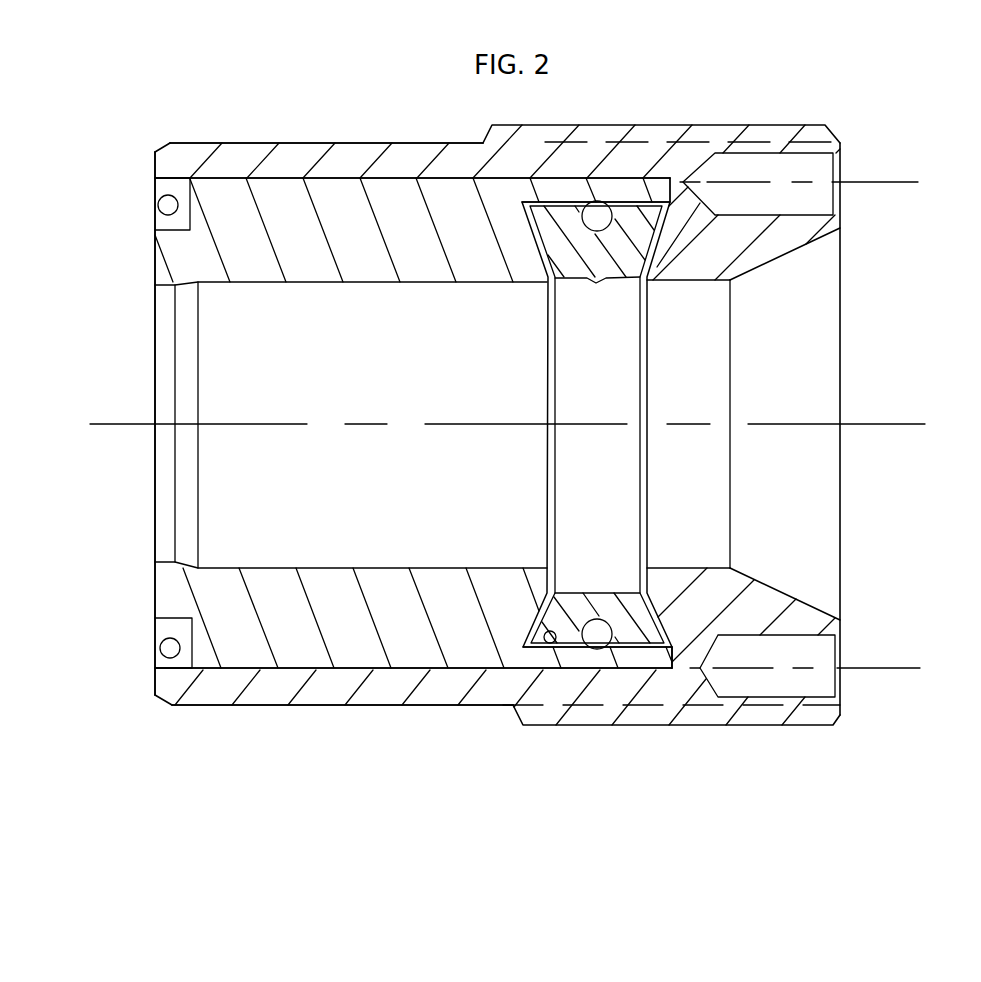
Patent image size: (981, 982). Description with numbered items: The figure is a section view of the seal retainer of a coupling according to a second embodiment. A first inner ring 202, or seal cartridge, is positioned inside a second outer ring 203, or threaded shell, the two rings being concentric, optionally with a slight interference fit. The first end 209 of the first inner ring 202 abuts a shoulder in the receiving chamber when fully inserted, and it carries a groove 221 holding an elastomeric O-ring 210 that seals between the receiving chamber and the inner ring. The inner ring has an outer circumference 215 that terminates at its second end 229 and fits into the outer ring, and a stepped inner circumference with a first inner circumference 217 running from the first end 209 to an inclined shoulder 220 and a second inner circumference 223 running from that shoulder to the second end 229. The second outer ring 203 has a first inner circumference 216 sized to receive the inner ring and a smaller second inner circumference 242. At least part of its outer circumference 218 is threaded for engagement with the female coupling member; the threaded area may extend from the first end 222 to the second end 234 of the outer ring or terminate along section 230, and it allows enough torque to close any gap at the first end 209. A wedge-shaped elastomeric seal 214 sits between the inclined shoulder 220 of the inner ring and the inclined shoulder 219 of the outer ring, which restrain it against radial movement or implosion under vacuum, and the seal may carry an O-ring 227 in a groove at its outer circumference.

The first inner ring 202 is at (353, 653).
The second outer ring 203 is at (758, 640).
The first end 209 is at (157, 593).
The elastomeric O-ring 210 is at (173, 657).
The elastomeric seal 214 is at (660, 617).
The outer circumference 215 is at (267, 688).
The first inner circumference 216 is at (297, 668).
The first inner circumference 217 is at (373, 560).
The outer circumference 218 is at (815, 703).
The inclined shoulder 219 is at (700, 665).
The inclined shoulder 220 is at (597, 649).
The groove 221 is at (190, 645).
The first end 222 is at (842, 647).
The second inner circumference 223 is at (546, 641).
The O-ring 227 is at (626, 640).
The second end 229 is at (680, 664).
The section 230 is at (448, 688).
The second end 234 is at (153, 697).
The second inner circumference 242 is at (687, 568).